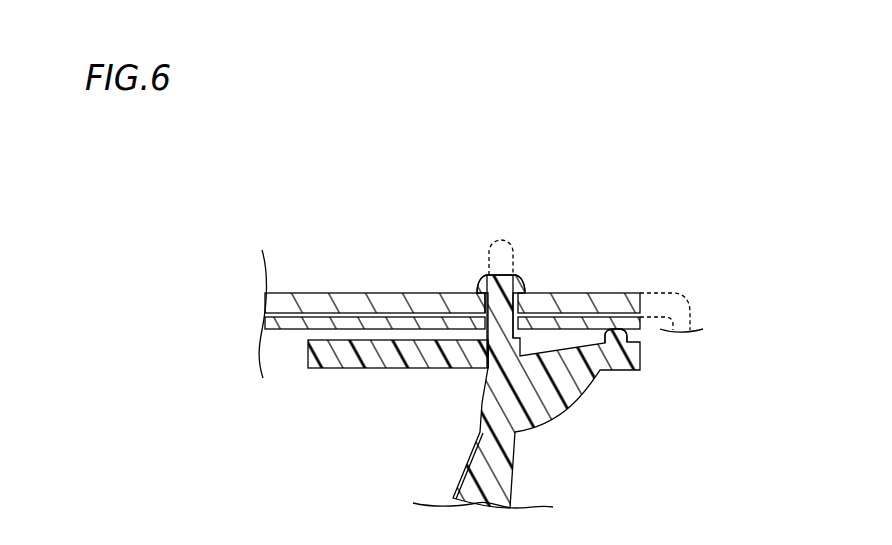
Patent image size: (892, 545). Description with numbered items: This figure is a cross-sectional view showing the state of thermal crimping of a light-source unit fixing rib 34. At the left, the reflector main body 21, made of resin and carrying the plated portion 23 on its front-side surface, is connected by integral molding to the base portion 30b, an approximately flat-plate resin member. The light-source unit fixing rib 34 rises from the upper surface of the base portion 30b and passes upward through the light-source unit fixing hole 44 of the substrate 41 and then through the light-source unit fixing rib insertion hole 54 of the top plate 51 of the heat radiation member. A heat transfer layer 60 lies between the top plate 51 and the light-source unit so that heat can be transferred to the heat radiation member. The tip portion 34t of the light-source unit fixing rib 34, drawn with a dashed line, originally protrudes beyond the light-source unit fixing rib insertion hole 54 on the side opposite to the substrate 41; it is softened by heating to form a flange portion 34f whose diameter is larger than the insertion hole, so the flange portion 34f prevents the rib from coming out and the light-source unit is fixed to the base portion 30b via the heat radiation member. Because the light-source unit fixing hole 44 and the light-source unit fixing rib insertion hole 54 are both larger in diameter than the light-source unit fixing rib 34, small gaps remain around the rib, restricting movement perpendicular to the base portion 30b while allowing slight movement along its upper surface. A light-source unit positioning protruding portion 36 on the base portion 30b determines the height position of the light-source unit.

The reflector main body 21 is at (508, 489).
The plated portion 23 is at (455, 495).
The base portion 30b is at (352, 355).
The light-source unit fixing rib 34 is at (497, 328).
The tip portion 34t is at (503, 252).
The flange portion 34f is at (524, 275).
The light-source unit positioning protruding portion 36 is at (620, 335).
The substrate 41 is at (580, 323).
The light-source unit fixing hole 44 is at (483, 338).
The top plate 51 is at (423, 303).
The light-source unit fixing rib insertion hole 54 is at (484, 290).
The heat transfer layer 60 is at (612, 316).